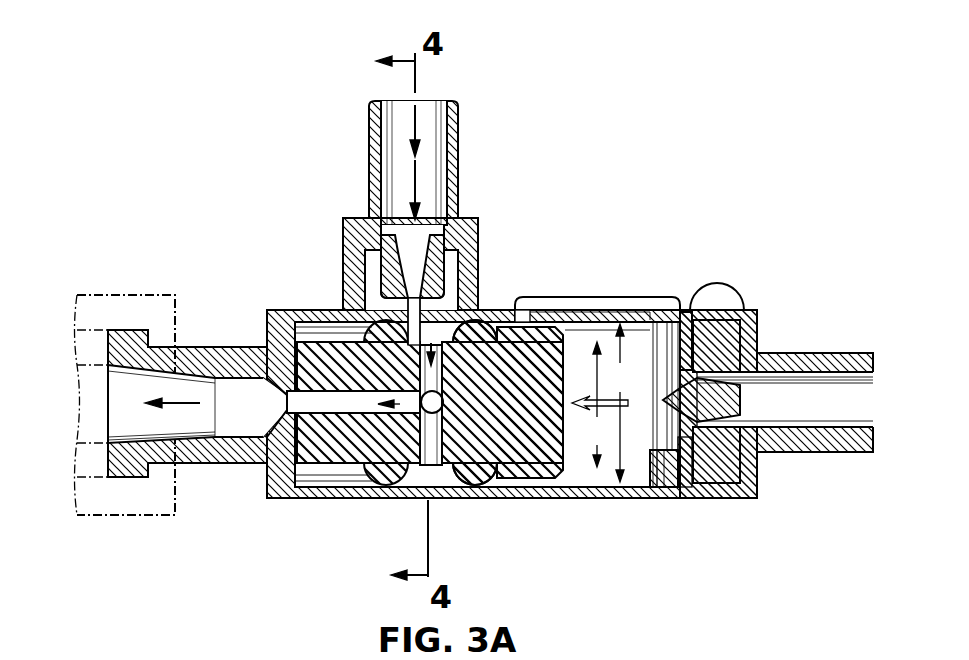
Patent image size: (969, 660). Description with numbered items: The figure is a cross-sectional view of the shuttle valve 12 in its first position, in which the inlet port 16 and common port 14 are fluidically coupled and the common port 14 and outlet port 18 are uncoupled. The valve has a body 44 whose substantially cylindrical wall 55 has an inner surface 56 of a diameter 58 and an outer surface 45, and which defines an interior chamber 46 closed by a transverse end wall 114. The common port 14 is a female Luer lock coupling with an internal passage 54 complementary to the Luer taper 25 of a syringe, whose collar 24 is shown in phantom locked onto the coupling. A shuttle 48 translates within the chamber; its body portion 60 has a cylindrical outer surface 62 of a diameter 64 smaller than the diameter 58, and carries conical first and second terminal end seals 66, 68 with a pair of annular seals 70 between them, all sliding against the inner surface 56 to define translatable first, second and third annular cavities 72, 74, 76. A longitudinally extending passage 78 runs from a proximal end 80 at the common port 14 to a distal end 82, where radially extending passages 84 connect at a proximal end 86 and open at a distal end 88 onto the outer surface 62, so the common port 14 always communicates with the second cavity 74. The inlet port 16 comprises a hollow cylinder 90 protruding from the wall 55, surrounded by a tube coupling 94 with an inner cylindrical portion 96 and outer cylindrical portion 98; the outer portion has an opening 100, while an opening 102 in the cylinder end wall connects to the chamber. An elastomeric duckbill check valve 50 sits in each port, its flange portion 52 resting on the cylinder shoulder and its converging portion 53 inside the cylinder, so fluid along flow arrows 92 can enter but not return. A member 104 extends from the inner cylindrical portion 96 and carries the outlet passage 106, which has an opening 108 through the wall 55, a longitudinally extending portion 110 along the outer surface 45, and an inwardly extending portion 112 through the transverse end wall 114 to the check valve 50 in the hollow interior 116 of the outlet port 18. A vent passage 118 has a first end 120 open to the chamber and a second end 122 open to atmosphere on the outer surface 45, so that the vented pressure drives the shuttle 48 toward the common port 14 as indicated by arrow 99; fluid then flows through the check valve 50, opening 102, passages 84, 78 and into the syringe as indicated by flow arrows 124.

The shuttle valve 12 is at (258, 92).
The common port 14 is at (130, 330).
The inlet port 16 is at (362, 125).
The outlet port 18 is at (795, 350).
The collar 24 is at (157, 295).
The Luer taper 25 is at (90, 360).
The body 44 is at (710, 498).
The outer surface 45 is at (652, 325).
The interior chamber 46 is at (684, 320).
The shuttle 48 is at (548, 487).
The check valve 50 is at (745, 403).
The flange portion 52 is at (385, 232).
The converging portion 53 is at (380, 272).
The internal passage 54 is at (125, 437).
The cylindrical wall 55 is at (478, 487).
The inner surface 56 is at (608, 487).
The diameter 58 is at (620, 403).
The body portion 60 is at (268, 330).
The outer surface 62 is at (335, 325).
The diameter 64 is at (593, 404).
The first terminal end seal 66 is at (300, 487).
The second terminal end seal 68 is at (566, 487).
The annular seals 70 is at (386, 487).
The first annular cavity 72 is at (350, 487).
The second annular cavity 74 is at (422, 468).
The third annular cavity 76 is at (515, 487).
The longitudinally extending passage 78 is at (328, 413).
The proximal end 80 is at (283, 403).
The distal end 82 is at (420, 400).
The radially extending passages 84 is at (443, 403).
The proximal end 86 is at (445, 413).
The distal end 88 is at (450, 340).
The hollow cylinder 90 is at (470, 250).
The flow arrows 92 is at (415, 125).
The tube coupling 94 is at (369, 152).
The inner cylindrical portion 96 is at (480, 222).
The outer cylindrical portion 98 is at (458, 125).
The arrow 99 is at (590, 400).
The opening 100 is at (420, 235).
The opening 102 is at (425, 320).
The member 104 is at (677, 300).
The outlet passage 106 is at (605, 312).
The opening 108 is at (530, 312).
The longitudinally extending portion 110 is at (582, 297).
The inwardly extending portion 112 is at (718, 290).
The transverse end wall 114 is at (745, 455).
The hollow interior 116 is at (853, 383).
The vent passage 118 is at (684, 487).
The first end 120 is at (652, 487).
The second end 122 is at (664, 487).
The flow arrows 124 is at (185, 430).